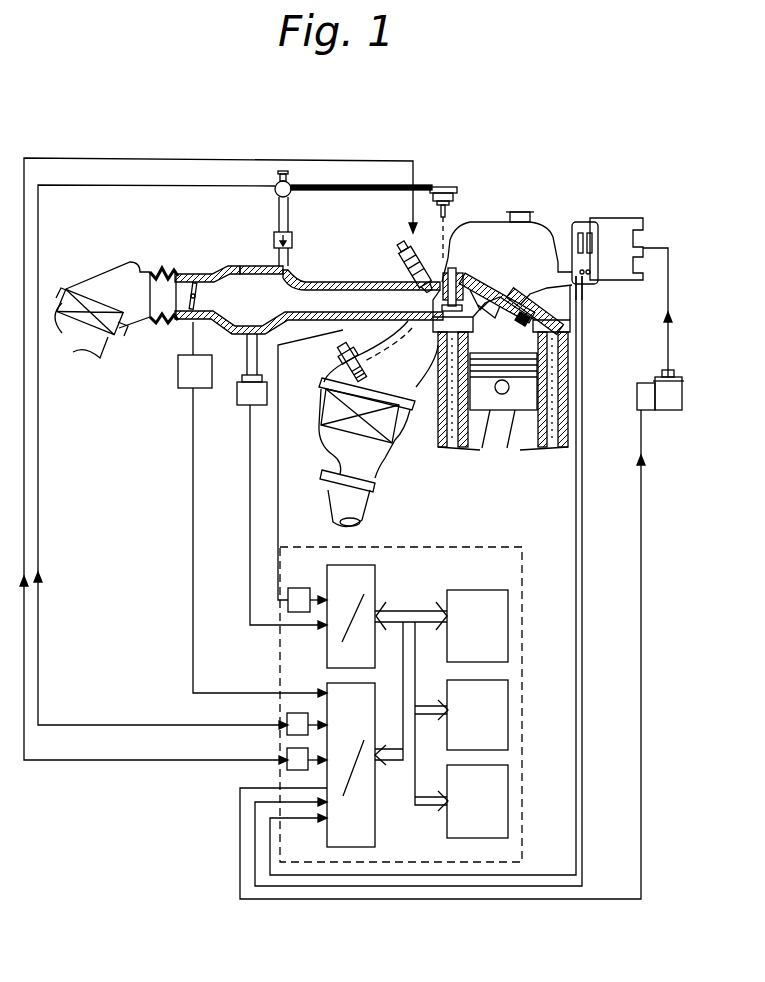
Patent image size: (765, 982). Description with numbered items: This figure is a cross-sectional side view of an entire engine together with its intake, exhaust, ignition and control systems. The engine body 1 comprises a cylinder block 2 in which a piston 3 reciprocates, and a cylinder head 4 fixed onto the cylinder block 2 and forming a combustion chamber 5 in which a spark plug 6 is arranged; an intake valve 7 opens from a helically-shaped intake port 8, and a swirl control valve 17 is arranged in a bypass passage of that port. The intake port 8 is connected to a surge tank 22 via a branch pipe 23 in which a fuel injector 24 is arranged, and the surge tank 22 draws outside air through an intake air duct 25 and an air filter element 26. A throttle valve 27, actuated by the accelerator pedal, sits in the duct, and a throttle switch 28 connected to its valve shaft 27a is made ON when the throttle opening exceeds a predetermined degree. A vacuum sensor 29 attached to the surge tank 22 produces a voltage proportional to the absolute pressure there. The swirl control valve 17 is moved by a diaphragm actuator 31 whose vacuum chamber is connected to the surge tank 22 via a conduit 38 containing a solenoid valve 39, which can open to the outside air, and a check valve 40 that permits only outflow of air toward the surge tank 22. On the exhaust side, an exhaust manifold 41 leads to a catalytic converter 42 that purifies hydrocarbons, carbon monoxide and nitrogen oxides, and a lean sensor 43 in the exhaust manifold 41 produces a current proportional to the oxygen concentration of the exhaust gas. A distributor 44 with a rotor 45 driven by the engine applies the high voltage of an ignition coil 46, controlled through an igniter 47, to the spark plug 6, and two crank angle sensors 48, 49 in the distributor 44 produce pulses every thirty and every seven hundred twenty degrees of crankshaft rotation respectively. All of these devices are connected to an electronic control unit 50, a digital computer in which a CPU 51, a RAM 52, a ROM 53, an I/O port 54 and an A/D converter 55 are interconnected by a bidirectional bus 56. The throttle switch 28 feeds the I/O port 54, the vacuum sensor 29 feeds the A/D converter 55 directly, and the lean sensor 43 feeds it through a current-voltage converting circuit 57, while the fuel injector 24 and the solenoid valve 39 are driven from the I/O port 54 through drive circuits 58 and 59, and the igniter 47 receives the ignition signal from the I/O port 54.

The engine body 1 is at (432, 438).
The cylinder block 2 is at (566, 430).
The piston 3 is at (480, 400).
The cylinder head 4 is at (563, 333).
The combustion chamber 5 is at (505, 347).
The spark plug 6 is at (543, 303).
The intake valve 7 is at (510, 290).
The helically-shaped intake port 8 is at (478, 287).
The swirl control valve 17 is at (438, 300).
The surge tank 22 is at (252, 267).
The branch pipe 23 is at (382, 282).
The fuel injector 24 is at (403, 262).
The intake air duct 25 is at (206, 284).
The air filter element 26 is at (95, 290).
The throttle valve 27 is at (190, 296).
The valve shaft 27a is at (197, 299).
The throttle switch 28 is at (178, 372).
The vacuum sensor 29 is at (237, 400).
The actuator 31 is at (450, 187).
The conduit 38 is at (290, 193).
The solenoid valve 39 is at (275, 195).
The check valve 40 is at (293, 241).
The exhaust manifold 41 is at (392, 341).
The catalytic converter 42 is at (322, 406).
The lean sensor 43 is at (343, 350).
The distributor 44 is at (625, 218).
The rotor 45 is at (573, 222).
The ignition coil 46 is at (672, 412).
The igniter 47 is at (637, 398).
The crank angle sensor 48 is at (613, 285).
The crank angle sensor 49 is at (588, 306).
The electronic control unit 50 is at (481, 547).
The central processing unit 51 is at (473, 590).
The random-access memory 52 is at (508, 713).
The read-only memory 53 is at (508, 801).
The input/output port 54 is at (375, 833).
The analog-digital converter 55 is at (376, 577).
The bidirectional bus 56 is at (417, 808).
The current-voltage converting circuit 57 is at (301, 588).
The drive circuit 58 is at (287, 763).
The drive circuit 59 is at (286, 716).